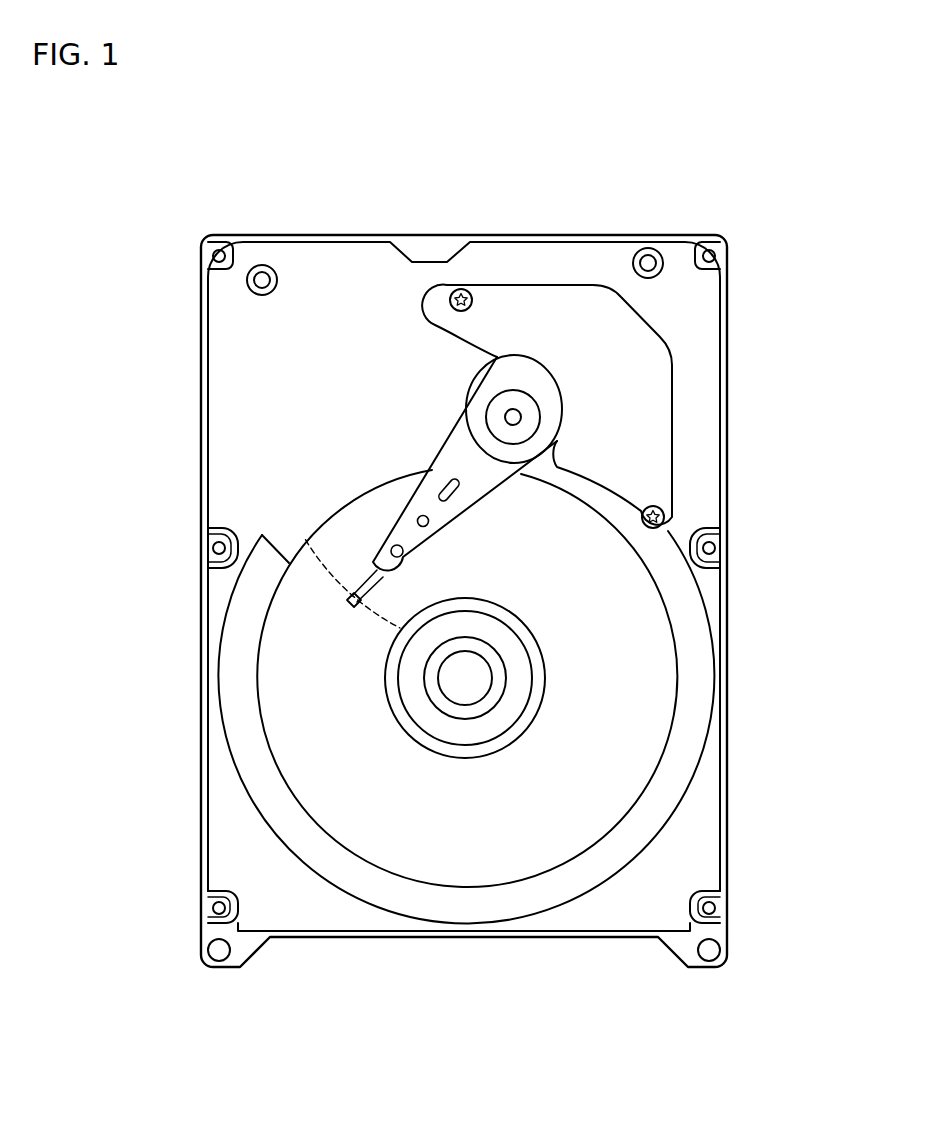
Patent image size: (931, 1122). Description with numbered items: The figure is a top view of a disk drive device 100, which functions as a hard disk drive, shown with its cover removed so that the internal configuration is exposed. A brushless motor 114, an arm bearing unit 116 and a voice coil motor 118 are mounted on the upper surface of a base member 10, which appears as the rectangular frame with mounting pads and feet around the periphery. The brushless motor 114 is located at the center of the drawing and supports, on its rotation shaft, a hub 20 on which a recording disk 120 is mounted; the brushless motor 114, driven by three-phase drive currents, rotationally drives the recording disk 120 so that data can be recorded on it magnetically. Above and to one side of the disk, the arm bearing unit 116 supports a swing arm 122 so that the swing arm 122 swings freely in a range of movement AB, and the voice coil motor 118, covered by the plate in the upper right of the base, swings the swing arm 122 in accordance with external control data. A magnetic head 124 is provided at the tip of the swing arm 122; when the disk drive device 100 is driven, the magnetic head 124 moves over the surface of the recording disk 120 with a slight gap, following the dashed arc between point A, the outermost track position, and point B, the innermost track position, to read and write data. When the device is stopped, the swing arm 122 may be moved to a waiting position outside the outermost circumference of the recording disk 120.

The disk drive device 100 is at (577, 191).
The base member 10 is at (727, 328).
The hub 20 is at (505, 708).
The brushless motor 114 is at (538, 645).
The arm bearing unit 116 is at (559, 424).
The voice coil motor 118 is at (642, 318).
The recording disk 120 is at (643, 711).
The swing arm 122 is at (437, 450).
The magnetic head 124 is at (353, 601).